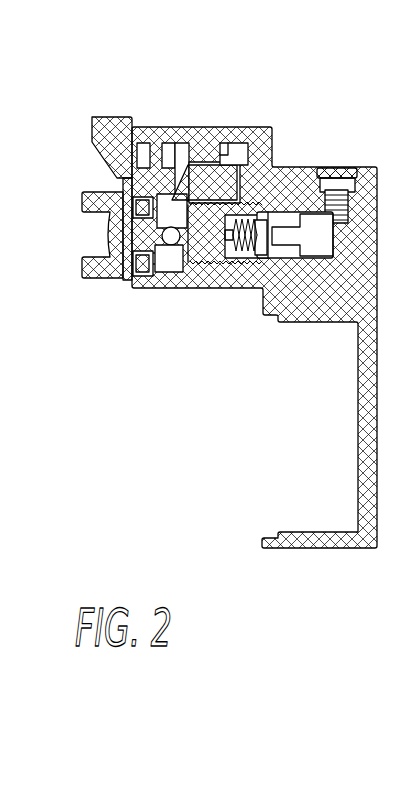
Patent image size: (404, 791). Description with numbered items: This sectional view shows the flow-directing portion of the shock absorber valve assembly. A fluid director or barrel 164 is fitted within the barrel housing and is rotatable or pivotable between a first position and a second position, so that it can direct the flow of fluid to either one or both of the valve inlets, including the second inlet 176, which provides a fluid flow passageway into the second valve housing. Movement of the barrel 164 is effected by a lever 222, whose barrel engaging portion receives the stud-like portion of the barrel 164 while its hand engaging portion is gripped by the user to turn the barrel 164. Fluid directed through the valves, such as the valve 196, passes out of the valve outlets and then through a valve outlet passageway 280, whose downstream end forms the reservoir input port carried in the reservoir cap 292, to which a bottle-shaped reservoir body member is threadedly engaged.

The barrel 164 is at (232, 143).
The second inlet 176 is at (192, 182).
The valve 196 is at (84, 238).
The lever 222 is at (105, 117).
The valve outlet passageway 280 is at (322, 240).
The reservoir cap 292 is at (334, 556).